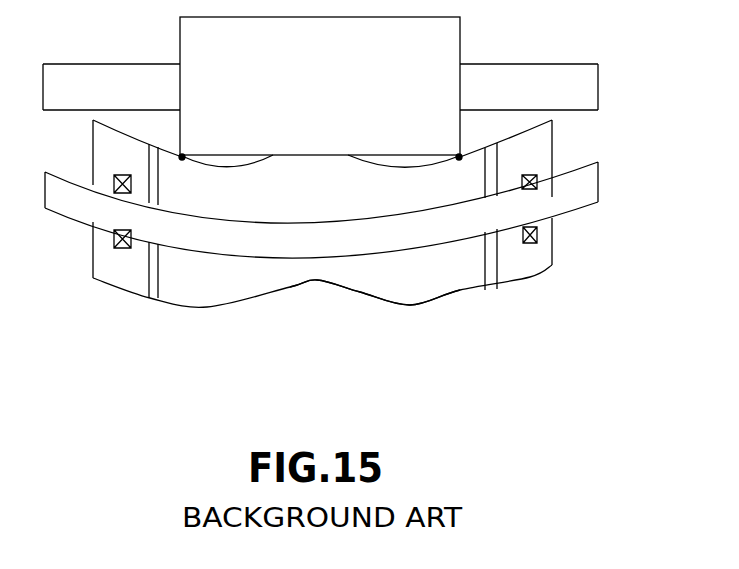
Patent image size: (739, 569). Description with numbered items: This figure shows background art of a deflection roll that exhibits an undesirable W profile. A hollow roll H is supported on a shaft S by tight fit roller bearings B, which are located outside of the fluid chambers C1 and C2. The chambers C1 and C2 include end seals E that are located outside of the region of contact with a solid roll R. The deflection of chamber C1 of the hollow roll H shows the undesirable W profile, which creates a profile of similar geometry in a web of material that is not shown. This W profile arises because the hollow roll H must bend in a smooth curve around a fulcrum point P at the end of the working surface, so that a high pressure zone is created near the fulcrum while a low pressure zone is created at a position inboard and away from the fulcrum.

The solid roll R is at (320, 86).
The fulcrum point P is at (319, 176).
The fluid chamber C1 is at (320, 185).
The fluid chamber C2 is at (375, 288).
The shaft S is at (583, 190).
The tight fit roller bearing B is at (125, 250).
The end seal E is at (158, 297).
The hollow roll H is at (440, 287).